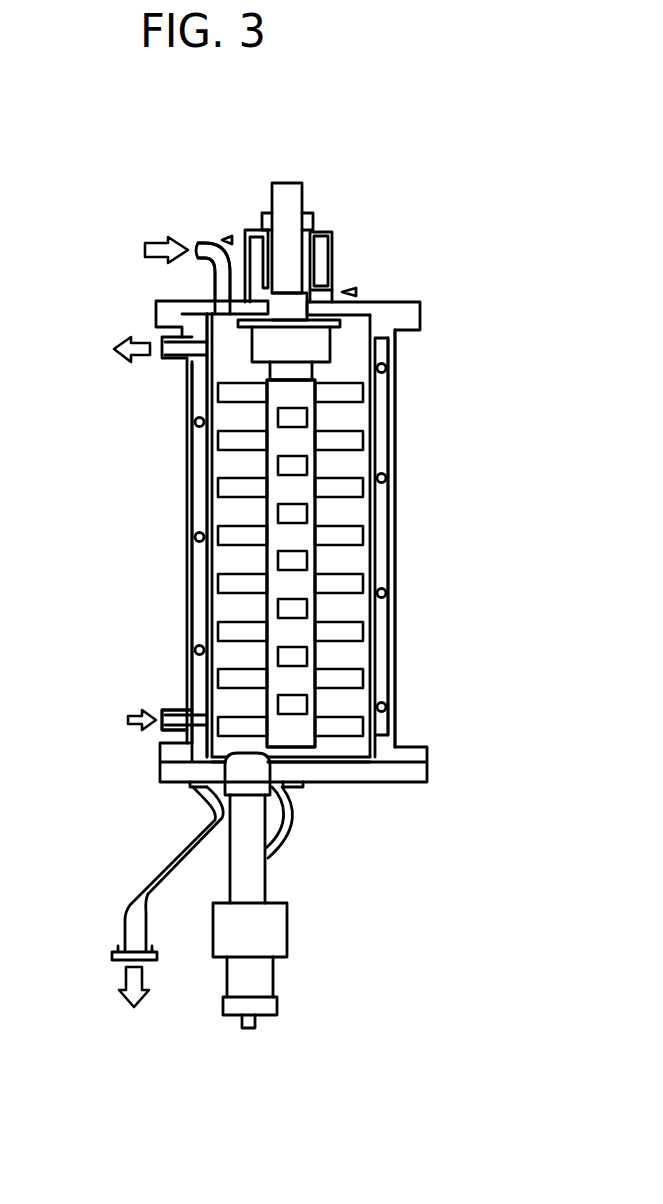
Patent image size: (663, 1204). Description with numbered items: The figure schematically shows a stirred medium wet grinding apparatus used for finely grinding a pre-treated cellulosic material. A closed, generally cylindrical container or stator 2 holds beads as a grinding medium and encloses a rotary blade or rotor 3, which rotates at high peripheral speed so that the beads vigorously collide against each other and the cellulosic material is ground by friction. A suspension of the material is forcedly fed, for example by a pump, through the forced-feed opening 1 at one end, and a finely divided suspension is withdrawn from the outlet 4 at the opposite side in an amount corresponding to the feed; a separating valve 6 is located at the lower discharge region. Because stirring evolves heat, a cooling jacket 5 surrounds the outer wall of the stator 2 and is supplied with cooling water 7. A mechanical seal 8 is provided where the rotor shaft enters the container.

The forced-feed opening 1 is at (200, 242).
The stator 2 is at (396, 500).
The rotor 3 is at (362, 434).
The outlet 4 is at (112, 968).
The cooling jacket 5 is at (195, 507).
The separating valve 6 is at (288, 924).
The cooling water 7 is at (149, 718).
The mechanical seal 8 is at (333, 258).